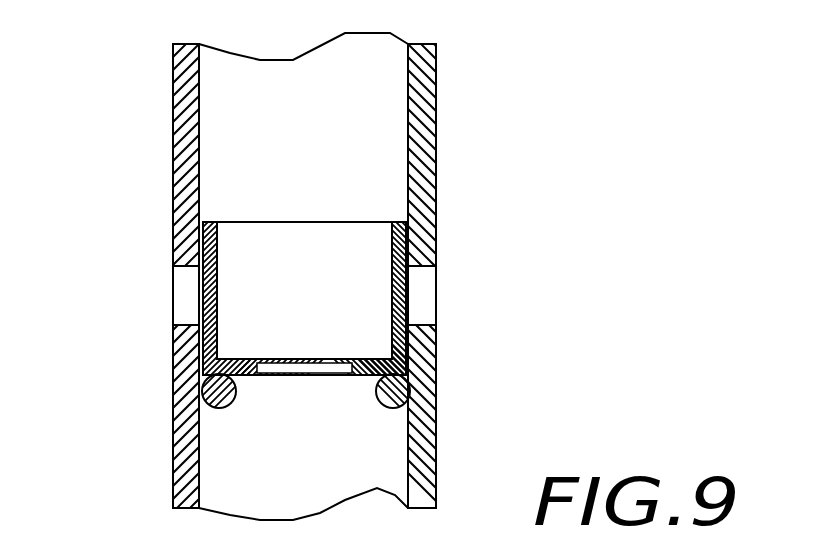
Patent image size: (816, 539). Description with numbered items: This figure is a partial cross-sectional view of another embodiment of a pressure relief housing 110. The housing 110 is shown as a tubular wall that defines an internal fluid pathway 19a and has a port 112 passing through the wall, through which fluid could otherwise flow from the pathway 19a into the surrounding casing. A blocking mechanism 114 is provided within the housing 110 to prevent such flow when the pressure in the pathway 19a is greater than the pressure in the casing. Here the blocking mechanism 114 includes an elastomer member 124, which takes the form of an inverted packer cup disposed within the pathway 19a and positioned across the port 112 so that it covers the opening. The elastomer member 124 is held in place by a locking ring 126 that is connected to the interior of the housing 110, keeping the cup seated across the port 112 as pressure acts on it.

The pathway 19a is at (267, 83).
The pressure relief housing 110 is at (452, 98).
The port 112 is at (445, 297).
The blocking mechanism 114 is at (225, 279).
The elastomer member 124 is at (407, 240).
The locking ring 126 is at (173, 423).